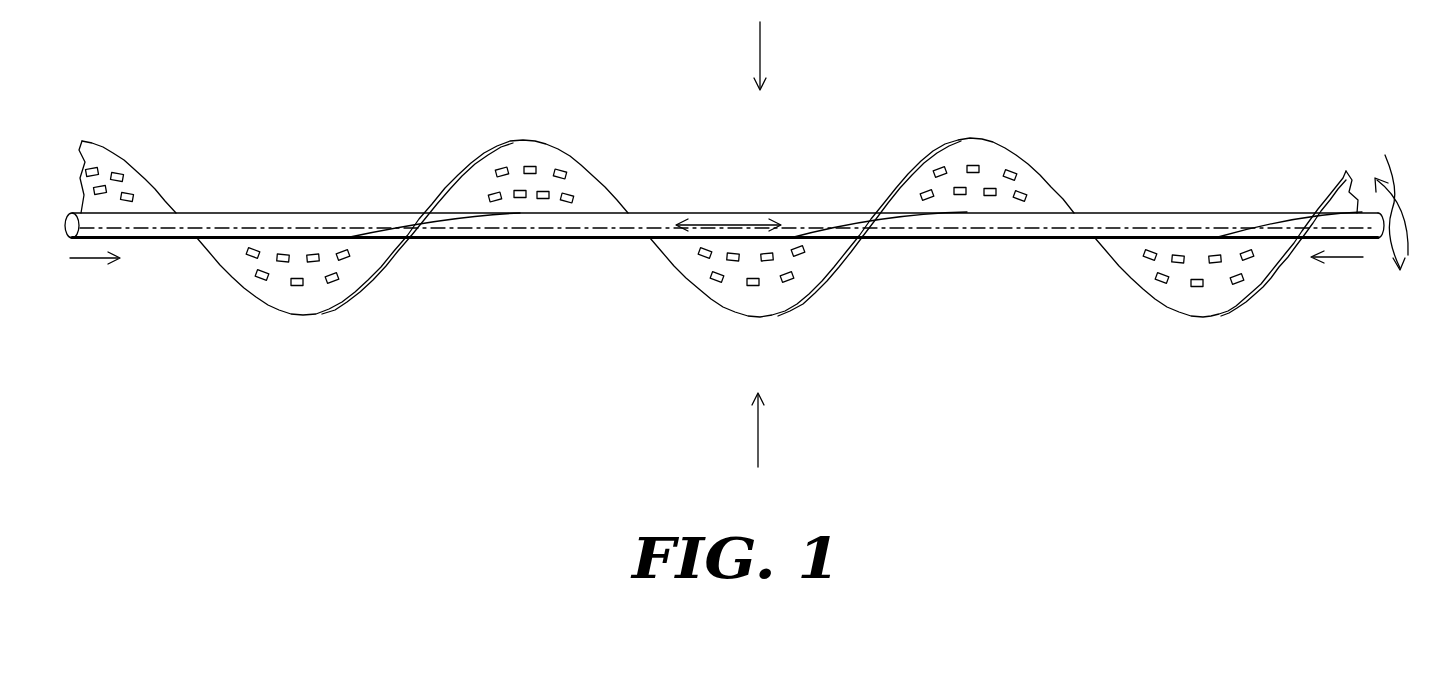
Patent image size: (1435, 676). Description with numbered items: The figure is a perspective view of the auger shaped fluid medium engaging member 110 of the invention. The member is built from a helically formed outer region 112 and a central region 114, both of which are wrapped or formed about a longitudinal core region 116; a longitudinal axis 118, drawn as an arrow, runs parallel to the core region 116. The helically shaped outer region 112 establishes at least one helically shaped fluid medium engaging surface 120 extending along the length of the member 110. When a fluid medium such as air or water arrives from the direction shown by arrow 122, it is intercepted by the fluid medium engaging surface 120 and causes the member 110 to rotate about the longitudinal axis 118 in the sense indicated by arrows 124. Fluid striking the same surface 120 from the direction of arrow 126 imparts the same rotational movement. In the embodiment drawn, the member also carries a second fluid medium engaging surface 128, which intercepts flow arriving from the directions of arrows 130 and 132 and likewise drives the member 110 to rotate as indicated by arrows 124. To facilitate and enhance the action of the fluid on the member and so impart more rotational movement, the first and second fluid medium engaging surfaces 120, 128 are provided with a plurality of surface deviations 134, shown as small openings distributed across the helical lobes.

The auger shaped fluid medium engaging member 110 is at (480, 25).
The helically formed outer region 112 is at (513, 138).
The central region 114 is at (500, 216).
The longitudinal core region 116 is at (957, 240).
The longitudinal axis 118 is at (731, 224).
The fluid medium engaging surface 120 is at (292, 300).
The arrow indicating fluid medium direction 122 is at (92, 262).
The arrows indicating rotational movement 124 is at (1389, 198).
The arrow indicating fluid medium direction 126 is at (761, 45).
The second fluid medium engaging surface 128 is at (968, 156).
The arrow indicating fluid medium direction 130 is at (1333, 264).
The arrow indicating fluid medium direction 132 is at (759, 440).
The surface deviations 134 is at (313, 257).